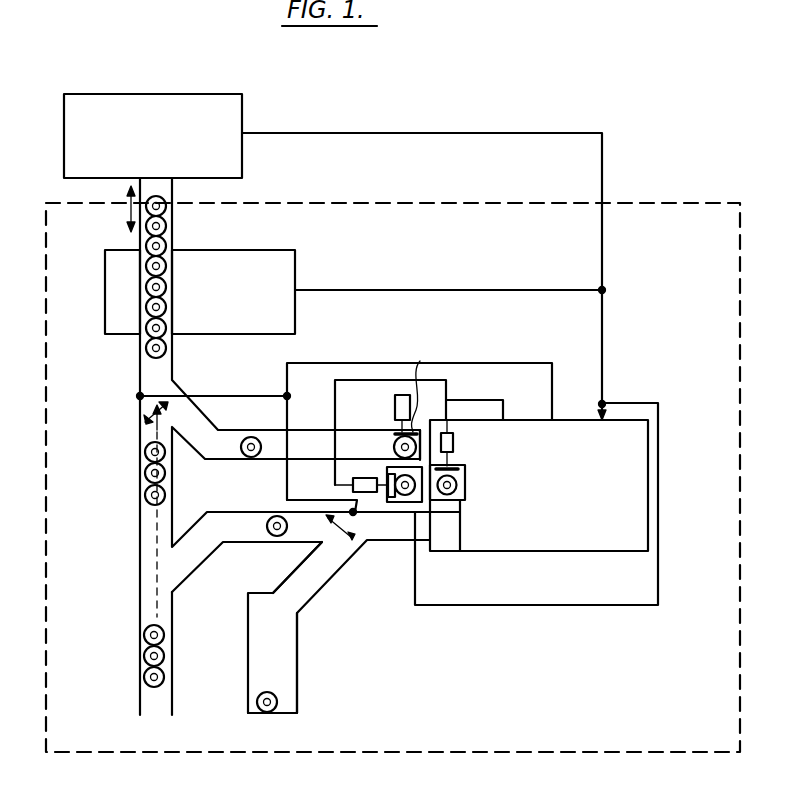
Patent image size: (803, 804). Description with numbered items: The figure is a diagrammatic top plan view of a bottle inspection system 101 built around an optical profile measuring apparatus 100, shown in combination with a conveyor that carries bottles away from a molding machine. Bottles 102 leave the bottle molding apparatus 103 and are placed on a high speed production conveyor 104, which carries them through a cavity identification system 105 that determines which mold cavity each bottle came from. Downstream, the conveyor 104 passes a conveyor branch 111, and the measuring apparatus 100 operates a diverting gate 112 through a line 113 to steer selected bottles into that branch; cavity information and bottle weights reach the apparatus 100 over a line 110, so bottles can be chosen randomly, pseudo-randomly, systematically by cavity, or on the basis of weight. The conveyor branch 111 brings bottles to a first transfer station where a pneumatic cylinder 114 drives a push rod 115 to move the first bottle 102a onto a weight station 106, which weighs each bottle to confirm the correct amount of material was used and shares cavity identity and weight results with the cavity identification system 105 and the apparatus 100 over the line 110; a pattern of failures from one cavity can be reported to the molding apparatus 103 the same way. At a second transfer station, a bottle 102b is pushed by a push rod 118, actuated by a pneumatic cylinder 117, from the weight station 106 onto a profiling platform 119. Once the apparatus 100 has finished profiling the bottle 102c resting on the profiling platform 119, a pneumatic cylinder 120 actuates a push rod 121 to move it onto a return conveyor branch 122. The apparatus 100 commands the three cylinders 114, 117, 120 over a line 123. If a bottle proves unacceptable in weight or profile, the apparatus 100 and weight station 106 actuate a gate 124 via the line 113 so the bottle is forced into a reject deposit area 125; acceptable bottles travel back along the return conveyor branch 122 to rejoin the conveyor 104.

The optical profile measuring apparatus 100 is at (649, 452).
The bottle inspection system 101 is at (684, 203).
The bottles 102 is at (174, 197).
The first bottle 102a is at (396, 440).
The bottle at second transfer station 102b is at (403, 504).
The bottle on profiling platform 102c is at (462, 504).
The bottle molding apparatus 103 is at (243, 117).
The high speed production conveyor 104 is at (136, 182).
The cavity identification system 105 is at (286, 250).
The weight station 106 is at (388, 501).
The line 110 is at (505, 133).
The conveyor branch 111 is at (312, 430).
The diverting gate 112 is at (138, 400).
The line 113 is at (271, 396).
The pneumatic cylinder 114 is at (391, 393).
The push rod 115 is at (426, 386).
The pneumatic cylinder 117 is at (353, 485).
The push rod 118 is at (385, 475).
The profiling platform 119 is at (444, 504).
The pneumatic cylinder 120 is at (455, 440).
The push rod 121 is at (448, 458).
The return conveyor branch 122 is at (382, 549).
The line 123 is at (434, 380).
The gate 124 is at (356, 516).
The reject deposit area 125 is at (299, 683).